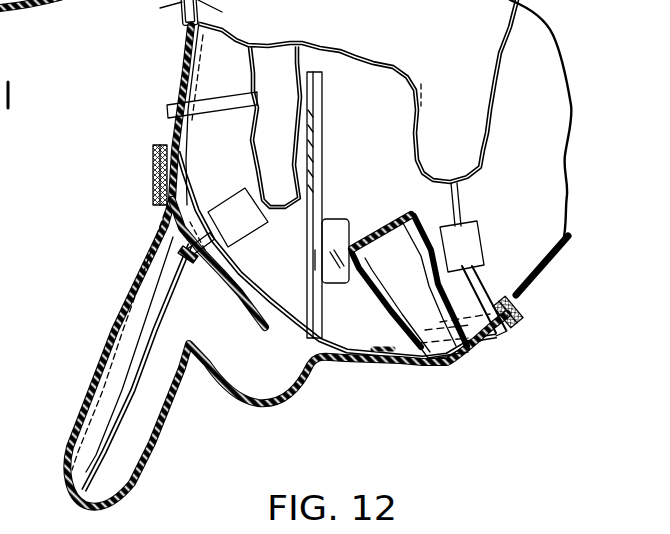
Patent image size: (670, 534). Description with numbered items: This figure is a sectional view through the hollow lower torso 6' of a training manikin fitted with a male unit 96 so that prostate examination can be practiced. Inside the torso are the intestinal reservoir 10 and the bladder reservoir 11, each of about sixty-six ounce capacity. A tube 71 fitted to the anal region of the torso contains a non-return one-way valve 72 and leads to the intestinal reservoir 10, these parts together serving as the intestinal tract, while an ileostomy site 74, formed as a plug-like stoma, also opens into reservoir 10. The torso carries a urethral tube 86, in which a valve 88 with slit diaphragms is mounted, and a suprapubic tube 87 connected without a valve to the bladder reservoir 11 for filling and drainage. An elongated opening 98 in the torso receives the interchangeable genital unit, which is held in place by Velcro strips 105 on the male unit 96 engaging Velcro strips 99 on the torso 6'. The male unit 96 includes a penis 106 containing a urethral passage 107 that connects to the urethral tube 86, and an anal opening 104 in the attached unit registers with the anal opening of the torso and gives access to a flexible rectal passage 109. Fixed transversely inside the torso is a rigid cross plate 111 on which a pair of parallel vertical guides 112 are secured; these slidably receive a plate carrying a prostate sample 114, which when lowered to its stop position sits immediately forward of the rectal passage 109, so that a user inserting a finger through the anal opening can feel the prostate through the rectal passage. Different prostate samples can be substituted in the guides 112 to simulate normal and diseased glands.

The intestinal reservoir 10 is at (487, 50).
The bladder reservoir 11 is at (268, 118).
The lower torso 6' is at (259, 361).
The tube 71 is at (460, 203).
The non-return one-way valve 72 is at (467, 240).
The ileostomy site 74 is at (181, 7).
The urethral tube 86 is at (208, 248).
The suprapubic tube 87 is at (169, 108).
The valve 88 is at (235, 210).
The male unit 96 is at (114, 257).
The elongated opening 98 is at (88, 0).
The Velcro strips 99 is at (180, 167).
The anal opening 104 is at (128, 0).
The Velcro strips 105 is at (153, 178).
The penis 106 is at (157, 437).
The urethral passage 107 is at (158, 316).
The flexible rectal passage 109 is at (382, 222).
The rigid cross plate 111 is at (309, 257).
The vertical guides 112 is at (321, 162).
The prostate sample 114 is at (332, 230).